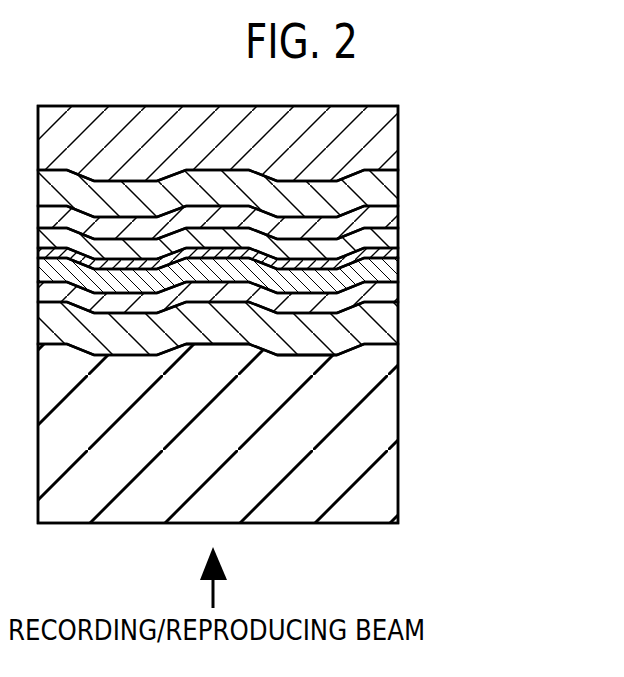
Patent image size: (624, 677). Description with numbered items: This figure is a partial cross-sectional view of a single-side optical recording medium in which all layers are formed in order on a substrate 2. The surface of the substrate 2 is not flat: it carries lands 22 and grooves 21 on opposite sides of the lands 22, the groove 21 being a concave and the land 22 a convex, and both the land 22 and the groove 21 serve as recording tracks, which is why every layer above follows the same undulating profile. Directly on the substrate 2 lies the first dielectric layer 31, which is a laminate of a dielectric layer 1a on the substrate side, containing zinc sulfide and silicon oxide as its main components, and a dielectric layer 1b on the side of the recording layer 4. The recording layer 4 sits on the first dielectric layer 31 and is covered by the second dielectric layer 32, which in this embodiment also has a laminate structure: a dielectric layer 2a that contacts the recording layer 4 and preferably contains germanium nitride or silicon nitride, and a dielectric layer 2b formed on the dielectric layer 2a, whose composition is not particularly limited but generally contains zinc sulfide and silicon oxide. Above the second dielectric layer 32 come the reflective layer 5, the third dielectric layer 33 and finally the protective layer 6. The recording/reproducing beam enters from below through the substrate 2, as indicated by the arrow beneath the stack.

The protective layer 6 is at (399, 135).
The third dielectric layer 33 is at (399, 188).
The reflective layer 5 is at (399, 212).
The dielectric layer 2b is at (399, 235).
The dielectric layer 2a is at (399, 252).
The second dielectric layer 32 is at (318, 233).
The recording layer 4 is at (399, 267).
The dielectric layer 1b is at (399, 292).
The dielectric layer 1a is at (399, 325).
The first dielectric layer 31 is at (318, 349).
The substrate 2 is at (273, 466).
The groove 21 is at (334, 471).
The land 22 is at (252, 464).